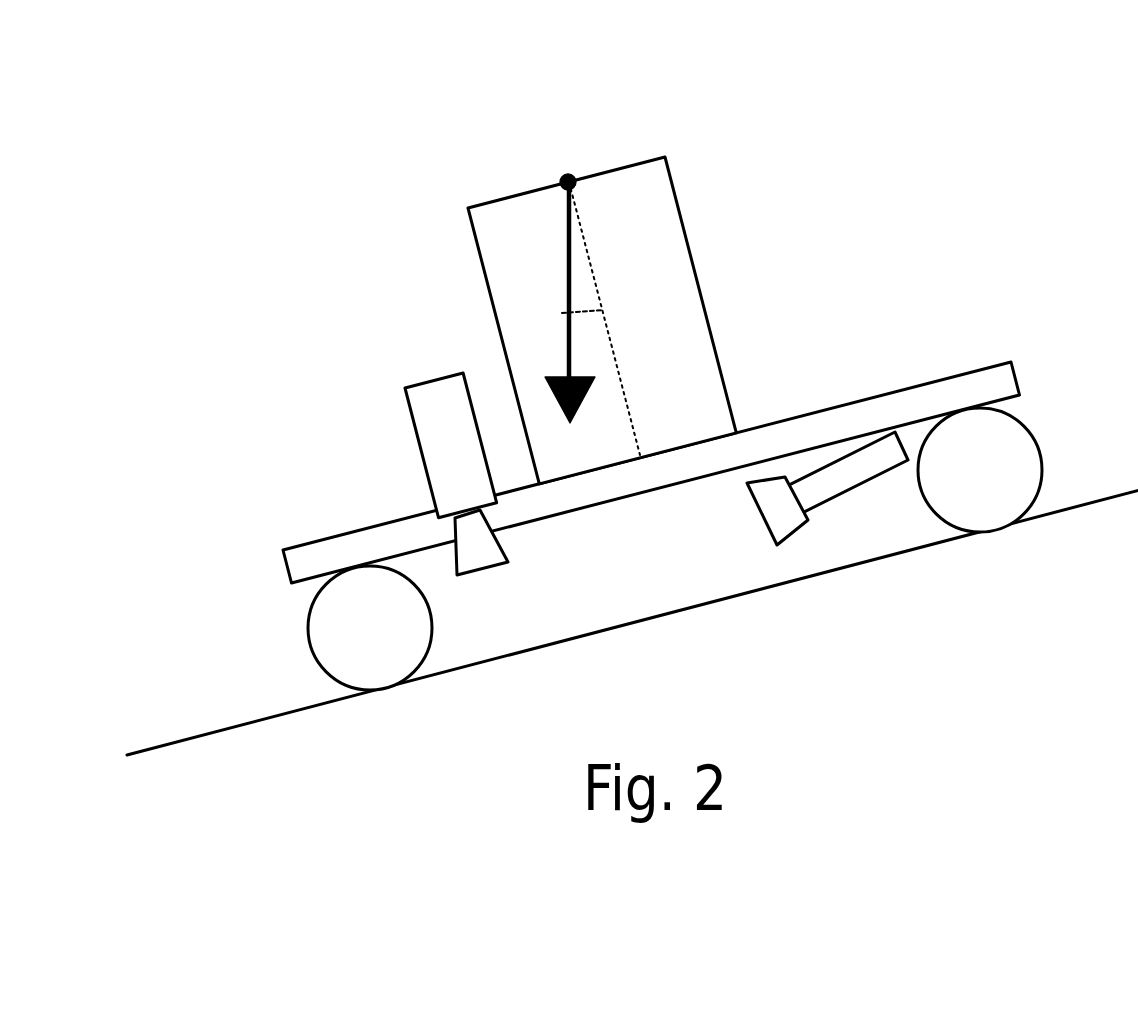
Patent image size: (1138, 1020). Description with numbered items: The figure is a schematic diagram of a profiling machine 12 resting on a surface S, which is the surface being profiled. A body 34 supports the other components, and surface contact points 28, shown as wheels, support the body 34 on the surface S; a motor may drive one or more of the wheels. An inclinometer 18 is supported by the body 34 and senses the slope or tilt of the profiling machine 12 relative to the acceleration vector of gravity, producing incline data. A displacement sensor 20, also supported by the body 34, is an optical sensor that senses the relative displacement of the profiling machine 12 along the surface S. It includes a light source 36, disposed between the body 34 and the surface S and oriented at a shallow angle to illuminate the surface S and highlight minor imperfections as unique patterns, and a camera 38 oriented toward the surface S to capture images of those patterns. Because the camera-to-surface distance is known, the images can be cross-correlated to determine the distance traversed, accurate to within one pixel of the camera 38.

The profiling machine 12 is at (660, 418).
The inclinometer 18 is at (632, 158).
The displacement sensor 20 is at (736, 513).
The surface contact points 28 is at (377, 667).
The body 34 is at (403, 535).
The light source 36 is at (832, 480).
The camera 38 is at (438, 398).
The surface S is at (220, 728).